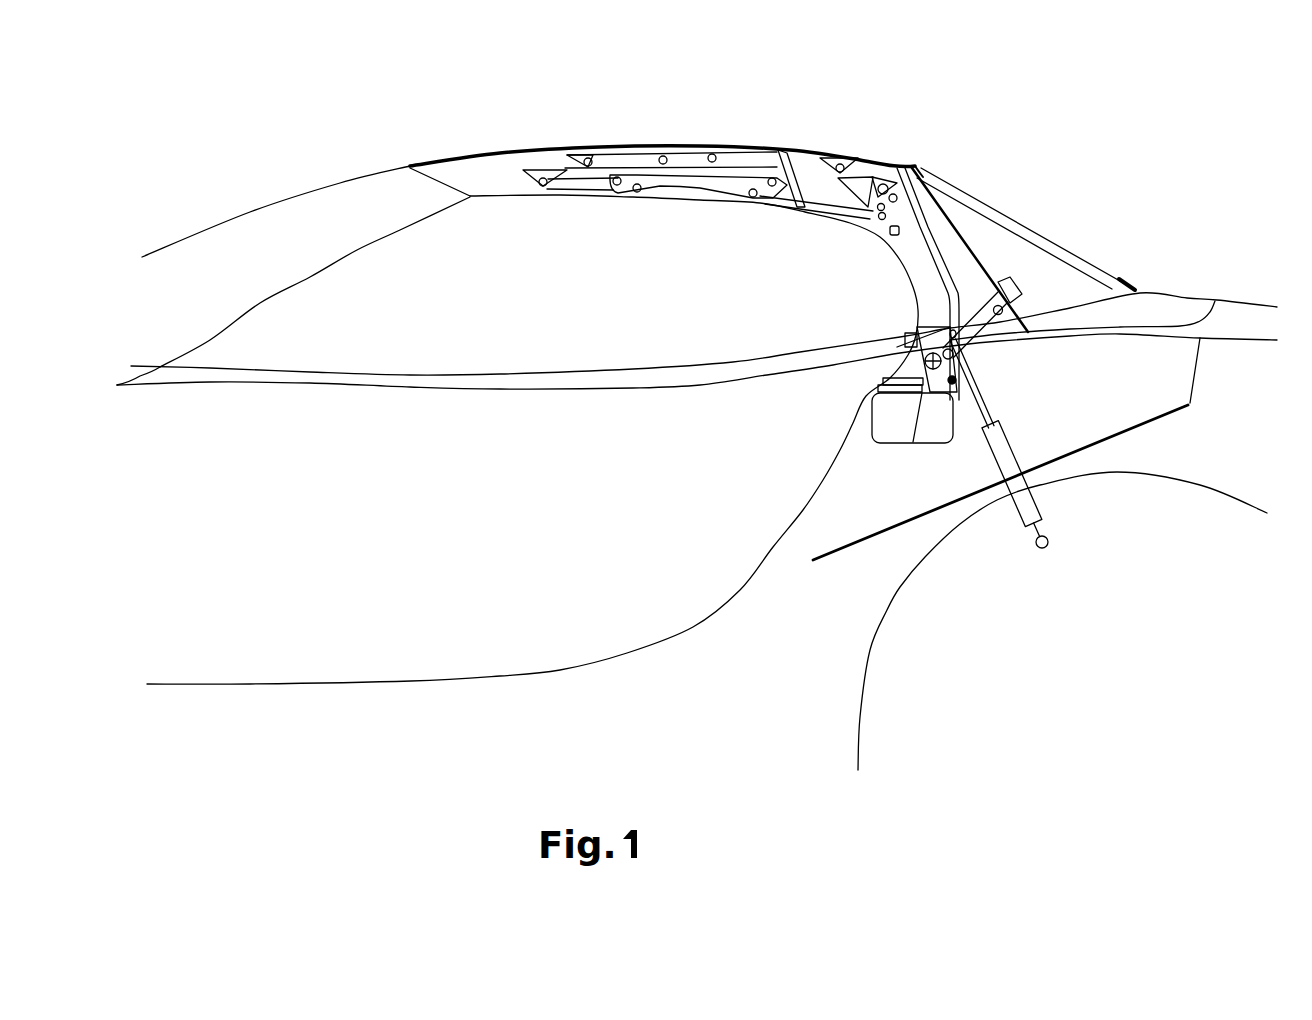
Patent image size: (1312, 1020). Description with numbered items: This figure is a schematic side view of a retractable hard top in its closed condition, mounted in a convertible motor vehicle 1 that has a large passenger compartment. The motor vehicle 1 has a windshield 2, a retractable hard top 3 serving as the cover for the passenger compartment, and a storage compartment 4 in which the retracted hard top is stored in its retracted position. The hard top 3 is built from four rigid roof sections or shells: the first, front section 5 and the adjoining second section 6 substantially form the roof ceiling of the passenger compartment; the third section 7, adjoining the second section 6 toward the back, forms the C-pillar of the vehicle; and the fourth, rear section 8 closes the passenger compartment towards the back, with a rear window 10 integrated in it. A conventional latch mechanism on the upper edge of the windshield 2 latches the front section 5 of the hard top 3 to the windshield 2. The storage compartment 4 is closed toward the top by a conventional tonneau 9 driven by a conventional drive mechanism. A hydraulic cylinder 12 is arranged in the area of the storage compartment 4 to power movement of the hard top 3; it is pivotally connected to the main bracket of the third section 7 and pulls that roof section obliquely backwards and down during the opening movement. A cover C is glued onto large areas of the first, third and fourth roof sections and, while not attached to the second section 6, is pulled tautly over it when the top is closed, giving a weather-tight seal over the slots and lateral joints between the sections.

The motor vehicle 1 is at (226, 749).
The windshield 2 is at (213, 247).
The retractable hard top 3 is at (826, 86).
The storage compartment 4 is at (1137, 378).
The front section 5 is at (507, 172).
The second section 6 is at (692, 145).
The third section 7 is at (872, 170).
The rear section 8 is at (1003, 258).
The tonneau 9 is at (1195, 307).
The rear window 10 is at (997, 213).
The hydraulic cylinder 12 is at (1032, 522).
The cover C is at (555, 147).